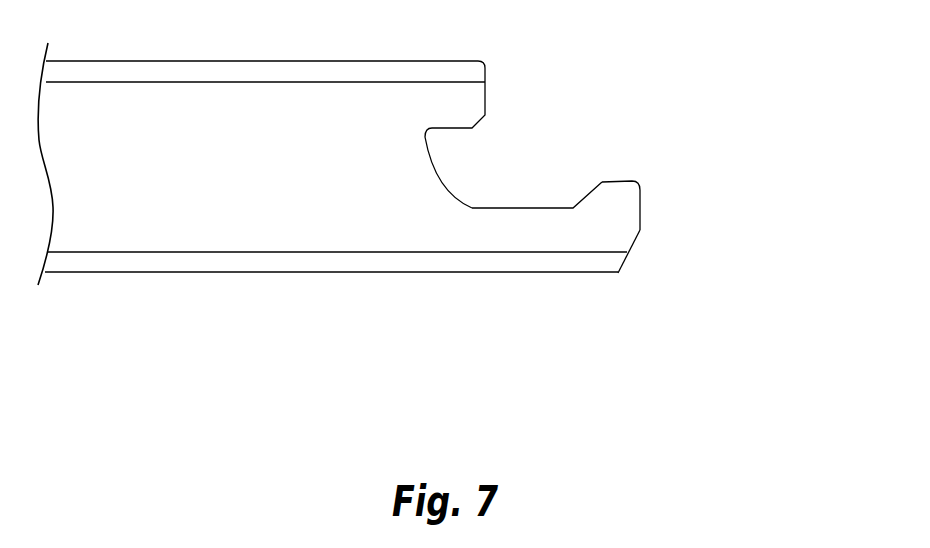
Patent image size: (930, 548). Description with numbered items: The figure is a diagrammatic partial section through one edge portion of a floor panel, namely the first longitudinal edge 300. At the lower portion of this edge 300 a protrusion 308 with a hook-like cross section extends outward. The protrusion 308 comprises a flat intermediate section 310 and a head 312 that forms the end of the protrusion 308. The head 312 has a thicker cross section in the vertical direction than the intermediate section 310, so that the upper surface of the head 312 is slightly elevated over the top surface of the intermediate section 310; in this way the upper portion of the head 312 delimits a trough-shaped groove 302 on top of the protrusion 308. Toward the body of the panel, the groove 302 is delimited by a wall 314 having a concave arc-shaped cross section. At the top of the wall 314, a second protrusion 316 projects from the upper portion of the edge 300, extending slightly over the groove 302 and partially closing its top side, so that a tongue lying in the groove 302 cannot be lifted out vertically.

The first longitudinal edge 300 is at (599, 335).
The trough-shaped groove 302 is at (540, 153).
The protrusion 308 is at (665, 235).
The flat intermediate section 310 is at (520, 238).
The head 312 is at (627, 202).
The wall 314 is at (437, 185).
The second protrusion 316 is at (448, 98).